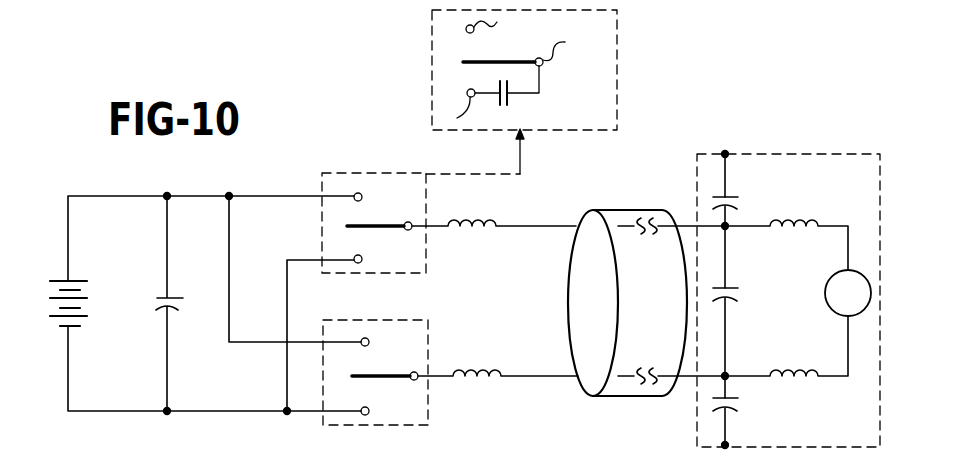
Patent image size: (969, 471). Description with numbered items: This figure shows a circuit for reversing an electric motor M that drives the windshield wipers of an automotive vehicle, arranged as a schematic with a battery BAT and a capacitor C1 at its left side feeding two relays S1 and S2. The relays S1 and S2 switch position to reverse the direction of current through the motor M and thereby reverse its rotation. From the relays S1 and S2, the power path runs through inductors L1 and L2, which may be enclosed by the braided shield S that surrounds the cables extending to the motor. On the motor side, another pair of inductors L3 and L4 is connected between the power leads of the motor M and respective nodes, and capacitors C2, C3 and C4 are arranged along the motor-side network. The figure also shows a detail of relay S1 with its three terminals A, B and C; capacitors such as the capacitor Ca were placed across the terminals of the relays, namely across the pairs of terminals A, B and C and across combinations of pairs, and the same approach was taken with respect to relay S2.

The battery BAT is at (94, 303).
The capacitor C1 is at (185, 303).
The relay S1 is at (469, 141).
The relay S2 is at (375, 372).
The inductor L1 is at (494, 205).
The inductor L2 is at (498, 356).
The braided shield S is at (633, 209).
The capacitor C2 is at (741, 200).
The capacitor C3 is at (741, 408).
The capacitor C4 is at (741, 295).
The inductor L3 is at (786, 227).
The inductor L4 is at (786, 346).
The electric motor M is at (848, 293).
The relay terminal A is at (489, 28).
The relay terminal B is at (458, 111).
The relay terminal C is at (560, 44).
The capacitor Ca is at (509, 109).